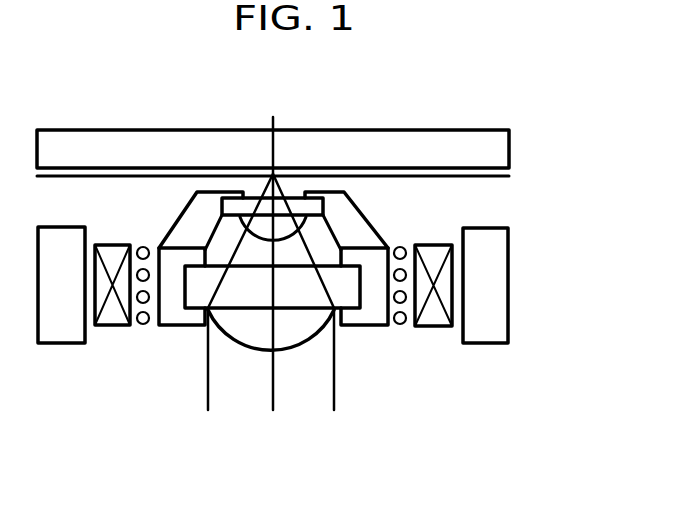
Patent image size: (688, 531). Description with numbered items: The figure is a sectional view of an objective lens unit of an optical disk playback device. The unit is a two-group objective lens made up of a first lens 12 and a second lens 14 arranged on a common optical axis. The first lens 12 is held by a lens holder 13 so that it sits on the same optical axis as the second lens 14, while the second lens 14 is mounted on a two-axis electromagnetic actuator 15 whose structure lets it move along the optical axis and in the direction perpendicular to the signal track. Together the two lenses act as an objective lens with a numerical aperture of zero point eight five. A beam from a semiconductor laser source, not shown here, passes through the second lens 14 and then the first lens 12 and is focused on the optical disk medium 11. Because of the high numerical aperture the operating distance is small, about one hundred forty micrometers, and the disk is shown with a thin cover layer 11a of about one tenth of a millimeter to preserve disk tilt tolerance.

The optical disk medium 11 is at (486, 119).
The cover layer 11a is at (509, 176).
The first lens 12 is at (262, 207).
The lens holder 13 is at (157, 327).
The second lens 14 is at (315, 320).
The two-axis electromagnetic actuator 15 is at (522, 277).